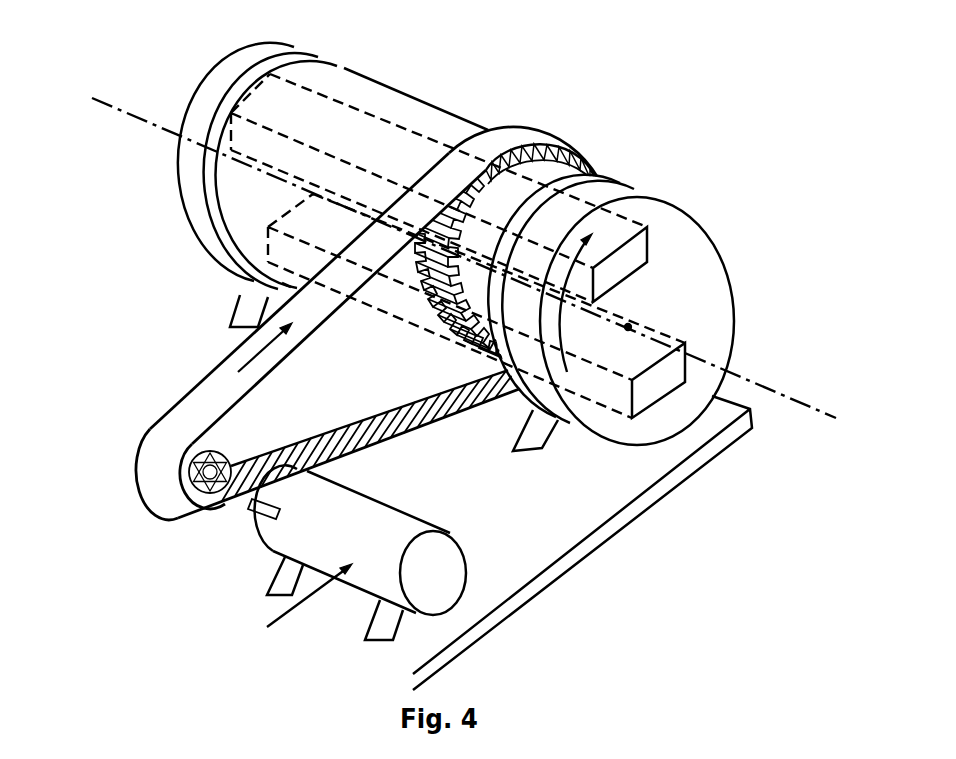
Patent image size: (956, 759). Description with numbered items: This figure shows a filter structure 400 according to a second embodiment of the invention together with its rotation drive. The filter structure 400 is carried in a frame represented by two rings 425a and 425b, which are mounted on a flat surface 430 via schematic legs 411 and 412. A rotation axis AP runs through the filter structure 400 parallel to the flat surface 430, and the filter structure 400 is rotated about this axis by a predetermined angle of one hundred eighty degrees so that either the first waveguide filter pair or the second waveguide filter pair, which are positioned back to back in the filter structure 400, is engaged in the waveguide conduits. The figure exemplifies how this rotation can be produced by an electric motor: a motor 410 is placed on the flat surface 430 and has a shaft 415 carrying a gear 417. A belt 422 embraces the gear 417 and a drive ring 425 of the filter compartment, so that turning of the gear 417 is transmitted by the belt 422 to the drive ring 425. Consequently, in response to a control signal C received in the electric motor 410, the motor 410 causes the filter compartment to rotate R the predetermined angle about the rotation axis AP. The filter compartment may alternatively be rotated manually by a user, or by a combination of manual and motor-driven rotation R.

The filter structure 400 is at (388, 45).
The ring 425a is at (207, 187).
The ring 425b is at (597, 179).
The drive ring 425 is at (433, 334).
The belt 422 is at (210, 398).
The gear 417 is at (190, 503).
The shaft 415 is at (267, 503).
The leg 411 is at (247, 307).
The leg 412 is at (535, 436).
The motor 410 is at (439, 577).
The flat surface 430 is at (528, 512).
The rotation axis AP is at (487, 268).
The rotation R is at (588, 295).
The control signal C is at (297, 608).